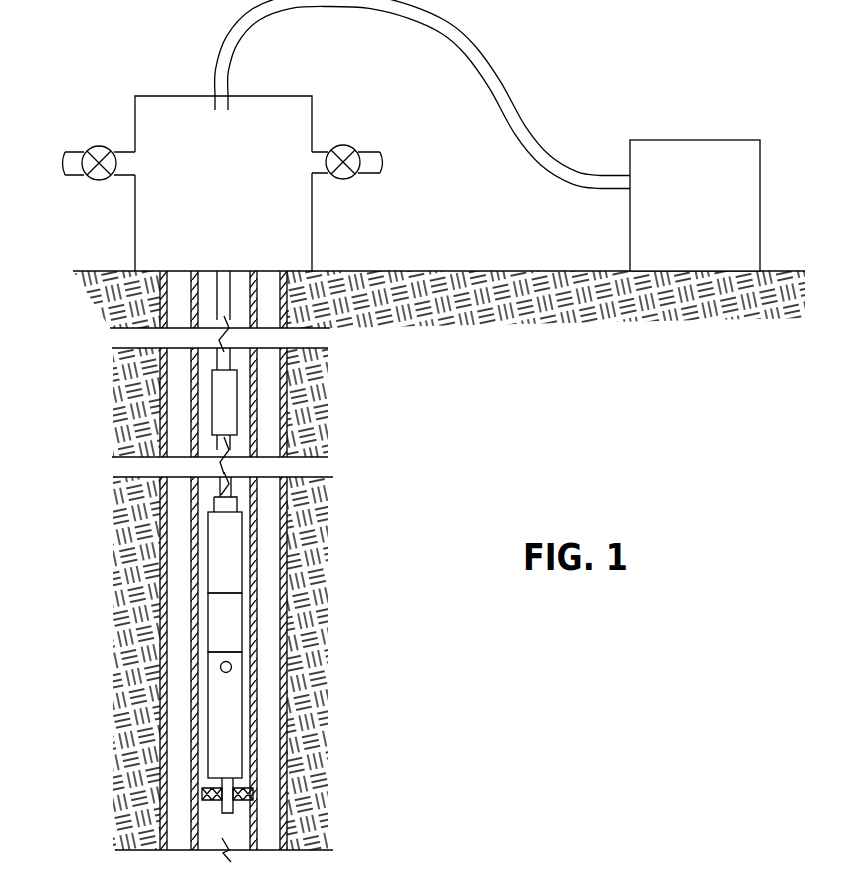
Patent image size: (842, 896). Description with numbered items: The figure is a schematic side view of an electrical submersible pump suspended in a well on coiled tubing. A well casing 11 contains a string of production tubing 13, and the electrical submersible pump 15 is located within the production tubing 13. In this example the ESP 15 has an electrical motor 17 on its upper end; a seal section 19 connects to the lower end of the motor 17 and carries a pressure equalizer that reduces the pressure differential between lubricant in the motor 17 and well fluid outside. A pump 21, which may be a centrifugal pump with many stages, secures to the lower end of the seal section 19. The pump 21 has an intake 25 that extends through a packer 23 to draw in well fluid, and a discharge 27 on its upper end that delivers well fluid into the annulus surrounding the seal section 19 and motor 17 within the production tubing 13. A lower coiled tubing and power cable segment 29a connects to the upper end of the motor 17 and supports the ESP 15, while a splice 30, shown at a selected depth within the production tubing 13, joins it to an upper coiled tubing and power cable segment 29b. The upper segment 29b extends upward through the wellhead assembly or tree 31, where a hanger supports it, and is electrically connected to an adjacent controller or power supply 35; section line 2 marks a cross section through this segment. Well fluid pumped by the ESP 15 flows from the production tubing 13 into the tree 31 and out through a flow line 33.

The section line 2 is at (493, 13).
The well casing 11 is at (285, 705).
The production tubing 13 is at (264, 666).
The electrical submersible pump 15 is at (248, 568).
The electrical motor 17 is at (215, 568).
The seal section 19 is at (215, 620).
The pump 21 is at (215, 725).
The packer 23 is at (200, 790).
The intake 25 is at (218, 803).
The discharge 27 is at (219, 668).
The lower coiled tubing and power cable segment 29a is at (218, 492).
The upper coiled tubing and power cable segment 29b is at (220, 297).
The splice 30 is at (223, 400).
The wellhead assembly or tree 31 is at (305, 240).
The flow line 33 is at (380, 160).
The power supply 35 is at (636, 240).